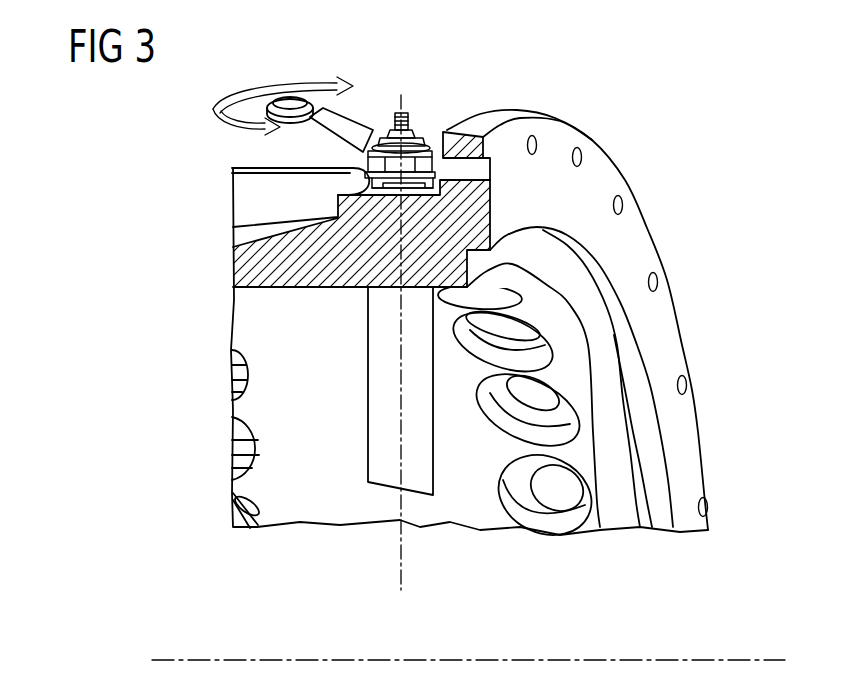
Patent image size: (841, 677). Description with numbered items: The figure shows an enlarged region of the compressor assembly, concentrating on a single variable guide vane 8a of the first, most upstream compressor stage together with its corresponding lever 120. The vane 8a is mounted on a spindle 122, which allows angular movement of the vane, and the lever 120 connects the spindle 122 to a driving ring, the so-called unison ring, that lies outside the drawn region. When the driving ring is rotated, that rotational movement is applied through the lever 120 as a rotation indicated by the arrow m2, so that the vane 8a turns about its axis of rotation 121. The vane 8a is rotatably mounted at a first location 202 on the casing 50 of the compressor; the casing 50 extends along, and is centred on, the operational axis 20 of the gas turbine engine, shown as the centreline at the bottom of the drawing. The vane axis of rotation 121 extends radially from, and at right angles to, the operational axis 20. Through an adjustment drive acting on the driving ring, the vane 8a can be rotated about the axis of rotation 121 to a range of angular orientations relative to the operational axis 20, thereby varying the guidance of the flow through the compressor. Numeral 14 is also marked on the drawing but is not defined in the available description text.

The housing body 14 is at (126, 216).
The arrow indicating rotational movement m2 is at (245, 95).
The lever 120 is at (352, 128).
The spindle 122 is at (442, 107).
The first location 202 is at (446, 192).
The vane 8a is at (378, 413).
The axis of rotation 121 is at (400, 545).
The casing 50 is at (495, 461).
The operational axis 20 is at (735, 657).